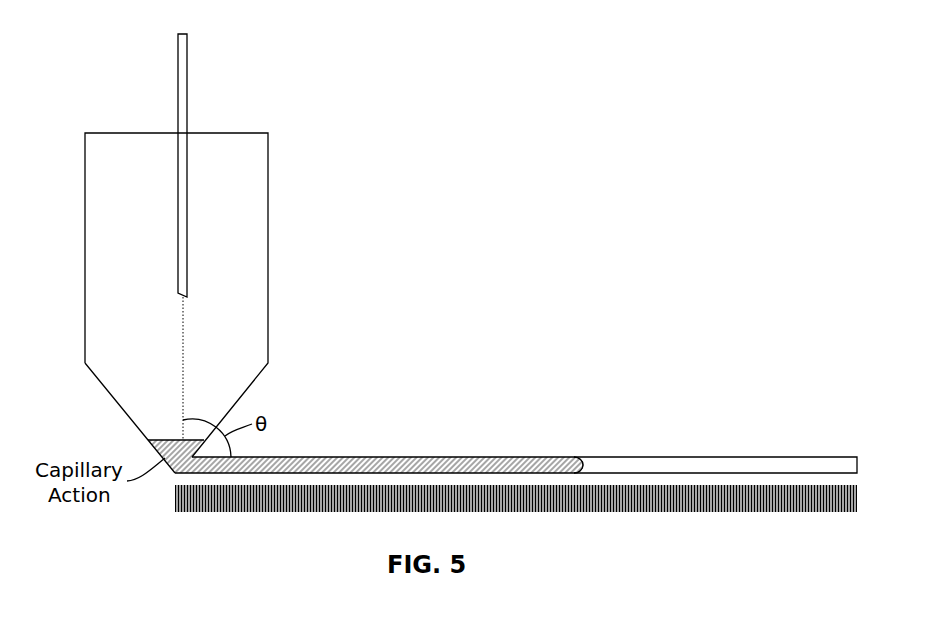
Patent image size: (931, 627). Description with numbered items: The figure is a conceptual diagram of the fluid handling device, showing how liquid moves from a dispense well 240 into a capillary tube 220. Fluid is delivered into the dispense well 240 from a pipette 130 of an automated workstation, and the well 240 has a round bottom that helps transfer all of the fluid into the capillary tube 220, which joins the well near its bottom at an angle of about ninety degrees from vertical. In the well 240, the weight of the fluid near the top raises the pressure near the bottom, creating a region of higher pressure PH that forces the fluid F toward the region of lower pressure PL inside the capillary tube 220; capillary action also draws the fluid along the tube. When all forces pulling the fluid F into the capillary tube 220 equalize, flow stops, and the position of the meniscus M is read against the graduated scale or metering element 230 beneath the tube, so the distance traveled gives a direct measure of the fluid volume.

The pipette 130 is at (188, 72).
The dispense well 240 is at (268, 170).
The capillary tube 220 is at (668, 456).
The graduated scale or metering element 230 is at (186, 515).
The fluid F is at (335, 460).
The meniscus M is at (597, 459).
The region of higher pressure PH is at (162, 423).
The region of lower pressure PL is at (835, 457).